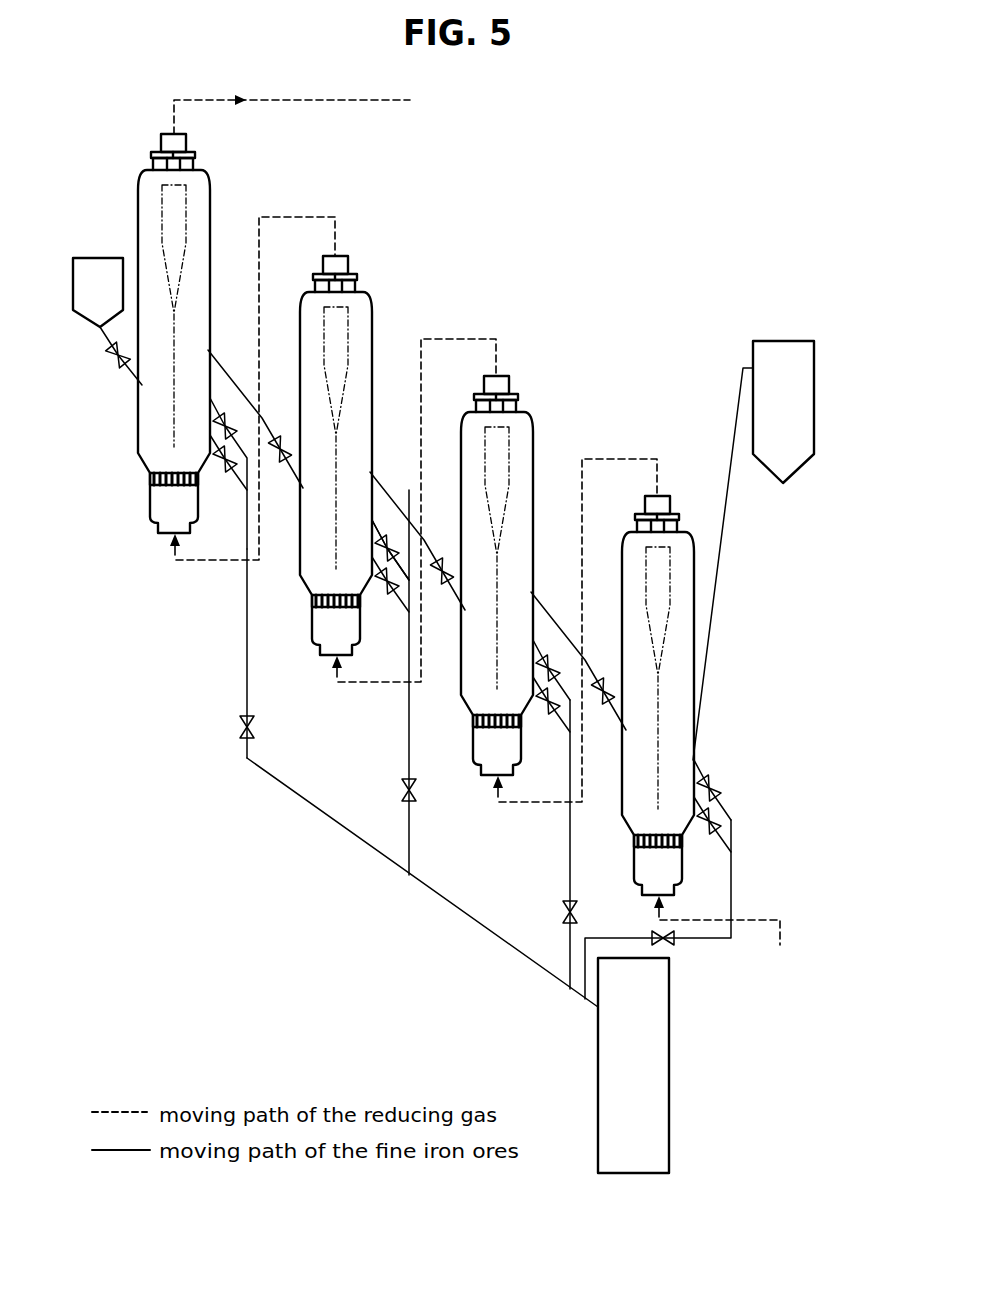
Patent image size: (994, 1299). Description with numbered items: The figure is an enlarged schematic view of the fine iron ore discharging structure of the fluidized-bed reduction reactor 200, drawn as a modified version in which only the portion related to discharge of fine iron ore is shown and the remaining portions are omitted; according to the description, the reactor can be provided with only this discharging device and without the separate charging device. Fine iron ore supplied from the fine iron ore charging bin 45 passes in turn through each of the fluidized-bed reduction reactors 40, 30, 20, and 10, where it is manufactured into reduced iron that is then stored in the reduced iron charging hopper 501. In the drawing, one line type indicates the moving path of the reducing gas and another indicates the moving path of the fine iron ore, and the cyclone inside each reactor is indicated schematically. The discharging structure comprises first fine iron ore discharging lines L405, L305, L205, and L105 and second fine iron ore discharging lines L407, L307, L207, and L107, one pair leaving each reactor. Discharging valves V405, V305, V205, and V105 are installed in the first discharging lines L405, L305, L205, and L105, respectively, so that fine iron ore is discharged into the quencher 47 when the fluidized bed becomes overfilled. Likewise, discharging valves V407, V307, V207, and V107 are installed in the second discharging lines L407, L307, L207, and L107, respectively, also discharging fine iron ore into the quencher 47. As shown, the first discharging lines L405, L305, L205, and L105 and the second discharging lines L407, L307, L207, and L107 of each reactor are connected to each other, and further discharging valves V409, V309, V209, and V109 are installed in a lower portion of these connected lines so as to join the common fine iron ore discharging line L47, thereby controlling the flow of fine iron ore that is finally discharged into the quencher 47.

The fluidized-bed reduction reactor 200 is at (556, 205).
The fluidized-bed reduction reactor 10 is at (694, 546).
The fluidized-bed reduction reactor 20 is at (534, 421).
The fluidized-bed reduction reactor 30 is at (373, 303).
The fluidized-bed reduction reactor 40 is at (210, 181).
The fine iron ore charging bin 45 is at (95, 258).
The quencher 47 is at (669, 1108).
The reduced iron charging hopper 501 is at (786, 341).
The first fine iron ore discharging line L105 is at (703, 770).
The discharging valve V105 is at (717, 795).
The second fine iron ore discharging line L107 is at (731, 847).
The discharging valve V107 is at (720, 824).
The discharging valve V109 is at (670, 946).
The first fine iron ore discharging line L205 is at (539, 650).
The discharging valve V205 is at (552, 660).
The second fine iron ore discharging line L207 is at (565, 734).
The discharging valve V207 is at (552, 720).
The discharging valve V209 is at (564, 912).
The first fine iron ore discharging line L305 is at (378, 530).
The discharging valve V305 is at (391, 540).
The second fine iron ore discharging line L307 is at (404, 614).
The discharging valve V307 is at (391, 600).
The discharging valve V309 is at (403, 792).
The first fine iron ore discharging line L405 is at (216, 408).
The discharging valve V405 is at (229, 418).
The second fine iron ore discharging line L407 is at (242, 492).
The discharging valve V407 is at (229, 478).
The discharging valve V409 is at (241, 732).
The fine iron ore discharging line L47 is at (452, 905).